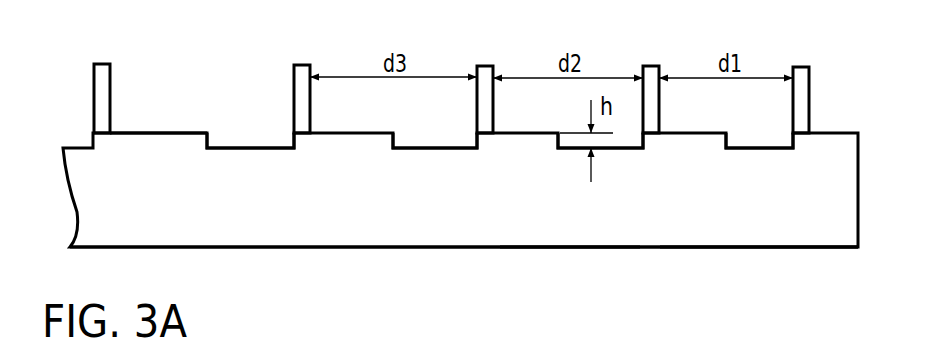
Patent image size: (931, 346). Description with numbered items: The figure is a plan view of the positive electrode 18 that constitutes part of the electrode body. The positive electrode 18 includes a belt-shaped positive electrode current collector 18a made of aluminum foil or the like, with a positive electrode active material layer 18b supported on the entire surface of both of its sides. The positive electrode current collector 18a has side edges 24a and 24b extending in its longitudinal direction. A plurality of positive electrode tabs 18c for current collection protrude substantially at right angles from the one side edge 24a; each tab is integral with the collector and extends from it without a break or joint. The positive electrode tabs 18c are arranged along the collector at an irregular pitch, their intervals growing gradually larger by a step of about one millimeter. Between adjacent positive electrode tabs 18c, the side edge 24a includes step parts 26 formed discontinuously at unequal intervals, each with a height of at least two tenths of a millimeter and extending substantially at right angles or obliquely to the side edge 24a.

The positive electrode 18 is at (232, 100).
The positive electrode current collector 18a is at (567, 250).
The positive electrode active material layer 18b is at (703, 223).
The positive electrode tabs 18c is at (100, 64).
The side edge 24a is at (157, 133).
The side edge 24b is at (182, 248).
The step parts 26 is at (210, 143).